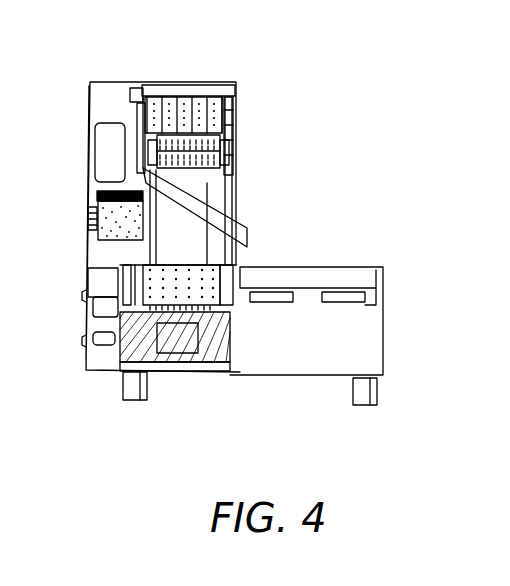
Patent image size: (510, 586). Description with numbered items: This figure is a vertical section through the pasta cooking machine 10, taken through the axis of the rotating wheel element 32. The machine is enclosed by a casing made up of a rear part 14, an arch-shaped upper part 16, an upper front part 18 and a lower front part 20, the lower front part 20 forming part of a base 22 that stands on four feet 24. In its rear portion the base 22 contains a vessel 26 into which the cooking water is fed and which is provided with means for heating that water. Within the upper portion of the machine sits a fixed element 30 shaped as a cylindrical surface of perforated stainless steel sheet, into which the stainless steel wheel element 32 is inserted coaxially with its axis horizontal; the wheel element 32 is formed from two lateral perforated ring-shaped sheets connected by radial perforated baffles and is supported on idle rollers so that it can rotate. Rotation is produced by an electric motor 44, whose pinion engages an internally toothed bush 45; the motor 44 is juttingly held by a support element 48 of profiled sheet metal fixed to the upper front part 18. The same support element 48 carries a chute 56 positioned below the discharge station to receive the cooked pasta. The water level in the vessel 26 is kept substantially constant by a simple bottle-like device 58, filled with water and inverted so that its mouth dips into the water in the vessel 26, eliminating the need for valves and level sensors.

The pasta cooking machine 10 is at (228, 73).
The rear part 14 is at (87, 268).
The upper part 16 is at (112, 82).
The upper front part 18 is at (235, 118).
The lower front part 20 is at (347, 378).
The base 22 is at (314, 378).
The feet 24 is at (142, 390).
The vessel 26 is at (233, 338).
The cylindrical element 30 is at (190, 280).
The wheel element 32 is at (235, 140).
The electric motor 44 is at (123, 217).
The bush 45 is at (90, 210).
The support element 48 is at (110, 267).
The chute 56 is at (190, 192).
The device 58 is at (108, 147).